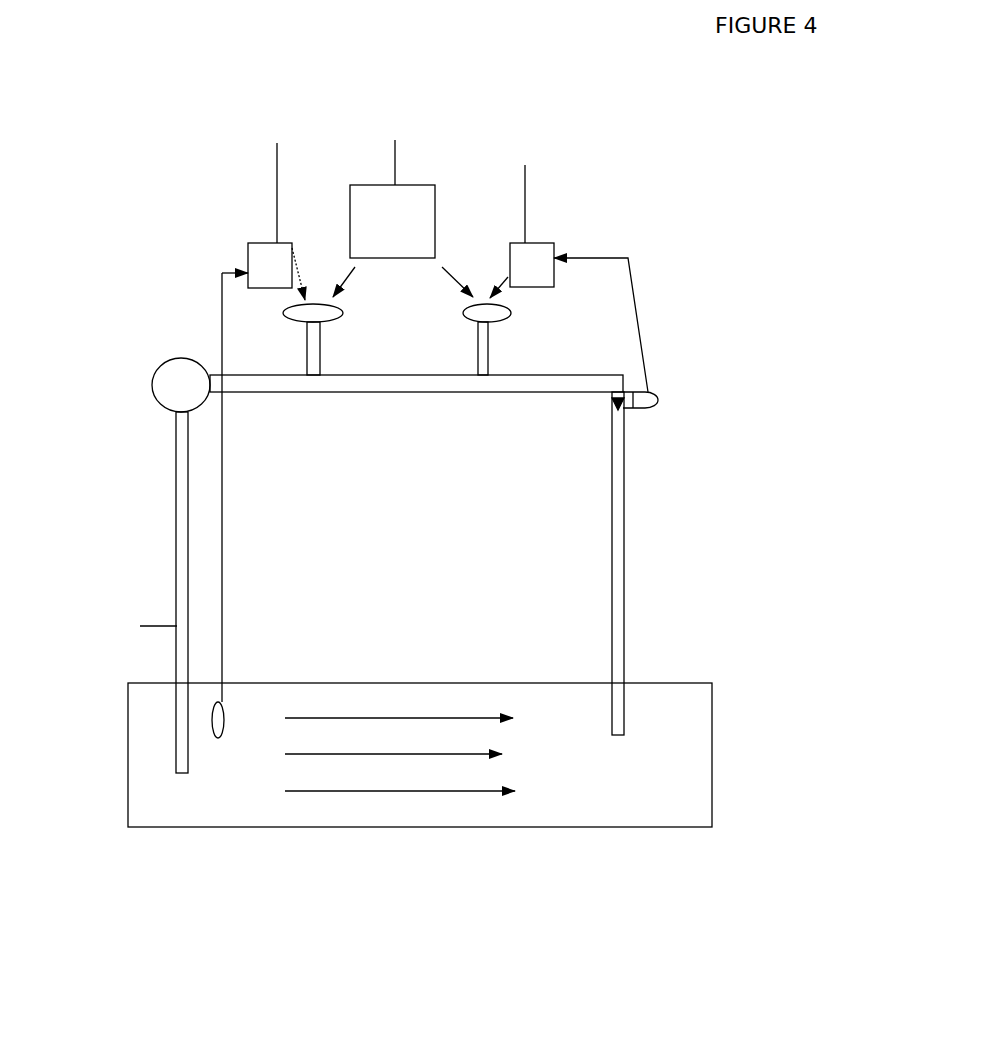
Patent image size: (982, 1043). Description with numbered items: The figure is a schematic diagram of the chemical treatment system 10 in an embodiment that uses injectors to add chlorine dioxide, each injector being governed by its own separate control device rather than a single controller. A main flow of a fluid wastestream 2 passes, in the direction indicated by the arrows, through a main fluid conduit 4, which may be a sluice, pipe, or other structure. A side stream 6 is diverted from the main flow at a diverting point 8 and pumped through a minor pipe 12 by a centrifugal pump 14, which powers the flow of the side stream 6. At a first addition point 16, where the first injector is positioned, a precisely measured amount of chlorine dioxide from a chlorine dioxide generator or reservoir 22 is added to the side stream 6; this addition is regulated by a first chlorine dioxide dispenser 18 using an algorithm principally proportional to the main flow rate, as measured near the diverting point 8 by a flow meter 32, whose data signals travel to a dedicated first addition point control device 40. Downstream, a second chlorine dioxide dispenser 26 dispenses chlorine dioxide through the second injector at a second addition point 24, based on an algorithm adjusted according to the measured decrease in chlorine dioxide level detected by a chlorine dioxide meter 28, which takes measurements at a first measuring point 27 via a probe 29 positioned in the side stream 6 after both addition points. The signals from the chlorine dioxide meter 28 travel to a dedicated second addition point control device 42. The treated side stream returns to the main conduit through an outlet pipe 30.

The main flow of a fluid wastestream 2 is at (382, 754).
The main fluid conduit 4 is at (393, 682).
The side stream 6 is at (140, 626).
The diverting point 8 is at (188, 773).
The system 10 is at (190, 172).
The minor pipe 12 is at (177, 522).
The centrifugal pump 14 is at (148, 390).
The first addition point 16 is at (322, 345).
The first chlorine dioxide dispenser 18 is at (277, 318).
The chlorine dioxide generator or reservoir 22 is at (403, 203).
The second addition point 24 is at (480, 360).
The second chlorine dioxide dispenser 26 is at (510, 300).
The first measuring point 27 is at (612, 406).
The chlorine dioxide meter 28 is at (660, 395).
The probe 29 is at (635, 408).
The outlet pipe 30 is at (630, 705).
The flow meter 32 is at (223, 708).
The first addition point control device 40 is at (263, 206).
The second addition point control device 42 is at (569, 266).